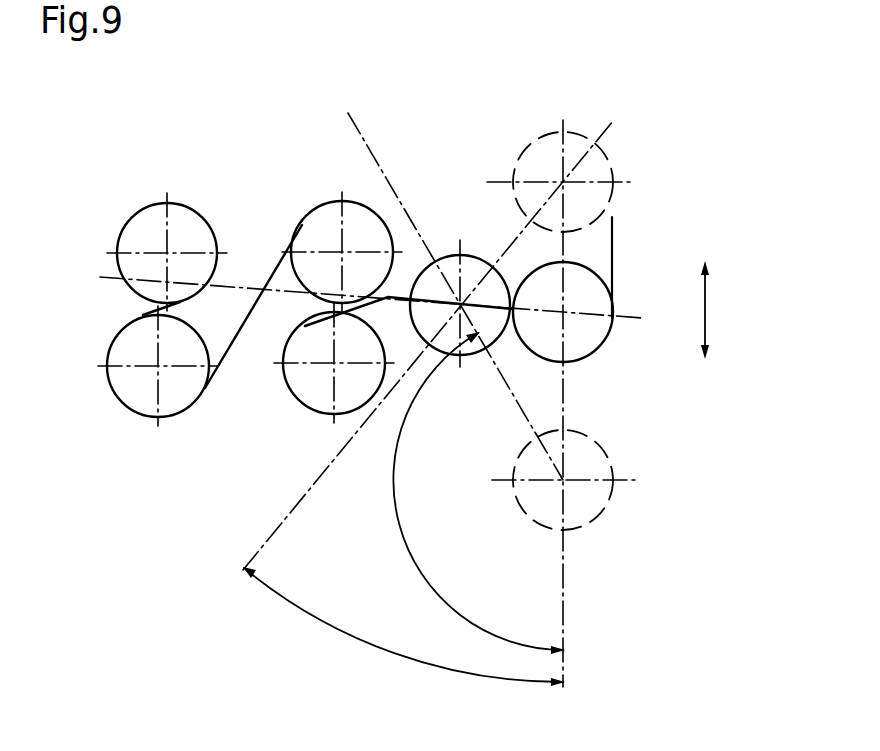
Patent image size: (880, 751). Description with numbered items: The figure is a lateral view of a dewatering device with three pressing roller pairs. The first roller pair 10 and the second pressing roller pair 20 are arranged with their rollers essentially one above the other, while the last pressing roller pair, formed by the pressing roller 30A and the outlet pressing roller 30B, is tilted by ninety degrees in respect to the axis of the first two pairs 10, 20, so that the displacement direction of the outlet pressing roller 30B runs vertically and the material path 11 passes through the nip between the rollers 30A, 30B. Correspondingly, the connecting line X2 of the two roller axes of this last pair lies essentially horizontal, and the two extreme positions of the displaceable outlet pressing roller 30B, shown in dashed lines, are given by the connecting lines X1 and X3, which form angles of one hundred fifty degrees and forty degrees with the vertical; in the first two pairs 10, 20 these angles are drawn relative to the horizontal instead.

The first roller pair 10 is at (130, 226).
The second pressing roller pair 20 is at (308, 223).
The pressing roller of the last roller pair 30A is at (449, 258).
The outlet pressing roller 30B is at (587, 285).
The material web 11 is at (510, 318).
The connecting line X1— X1 is at (615, 563).
The connecting line X2— X2 is at (375, 304).
The connecting line X3— X3 is at (423, 378).